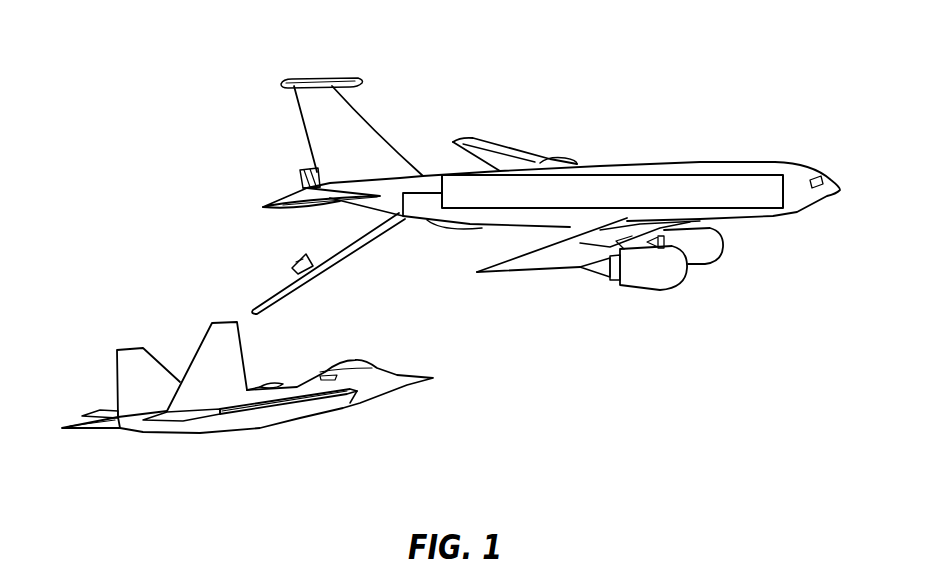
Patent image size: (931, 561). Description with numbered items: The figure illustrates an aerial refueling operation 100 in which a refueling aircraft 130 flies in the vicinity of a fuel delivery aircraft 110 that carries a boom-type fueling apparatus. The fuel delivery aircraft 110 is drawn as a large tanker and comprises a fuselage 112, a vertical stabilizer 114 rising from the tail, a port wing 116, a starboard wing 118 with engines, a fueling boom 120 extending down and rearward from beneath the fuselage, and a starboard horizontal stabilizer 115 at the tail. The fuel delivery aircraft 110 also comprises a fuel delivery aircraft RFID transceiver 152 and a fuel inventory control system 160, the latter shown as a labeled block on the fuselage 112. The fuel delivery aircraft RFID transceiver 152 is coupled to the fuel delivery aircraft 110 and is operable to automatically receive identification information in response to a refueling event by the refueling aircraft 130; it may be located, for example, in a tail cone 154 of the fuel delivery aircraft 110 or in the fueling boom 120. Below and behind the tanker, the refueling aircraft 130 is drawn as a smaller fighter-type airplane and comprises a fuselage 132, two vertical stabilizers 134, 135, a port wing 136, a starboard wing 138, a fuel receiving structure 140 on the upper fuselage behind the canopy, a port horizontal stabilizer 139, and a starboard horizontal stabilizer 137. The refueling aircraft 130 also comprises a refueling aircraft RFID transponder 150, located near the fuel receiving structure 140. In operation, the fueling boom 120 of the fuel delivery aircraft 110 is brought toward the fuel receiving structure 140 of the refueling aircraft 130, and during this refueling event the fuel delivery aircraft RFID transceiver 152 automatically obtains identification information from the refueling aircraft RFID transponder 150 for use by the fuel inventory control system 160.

The aerial refueling operation 100 is at (236, 44).
The fuel delivery aircraft 110 is at (712, 90).
The fuselage 112 is at (765, 160).
The vertical stabilizer 114 is at (365, 118).
The starboard horizontal stabilizer 115 is at (290, 197).
The port wing 116 is at (503, 143).
The starboard wing 118 is at (547, 264).
The fueling boom 120 is at (372, 242).
The fuel delivery aircraft RFID transceiver 152 is at (300, 185).
The tail cone 154 is at (300, 188).
The fuel inventory control system 160 is at (677, 175).
The refueling aircraft 130 is at (351, 452).
The fuselage 132 is at (400, 395).
The vertical stabilizer 134 is at (130, 348).
The vertical stabilizer 135 is at (218, 320).
The port wing 136 is at (105, 408).
The starboard horizontal stabilizer 137 is at (185, 420).
The starboard wing 138 is at (280, 410).
The port horizontal stabilizer 139 is at (80, 432).
The fuel receiving structure 140 is at (270, 382).
The refueling aircraft RFID transponder 150 is at (257, 380).